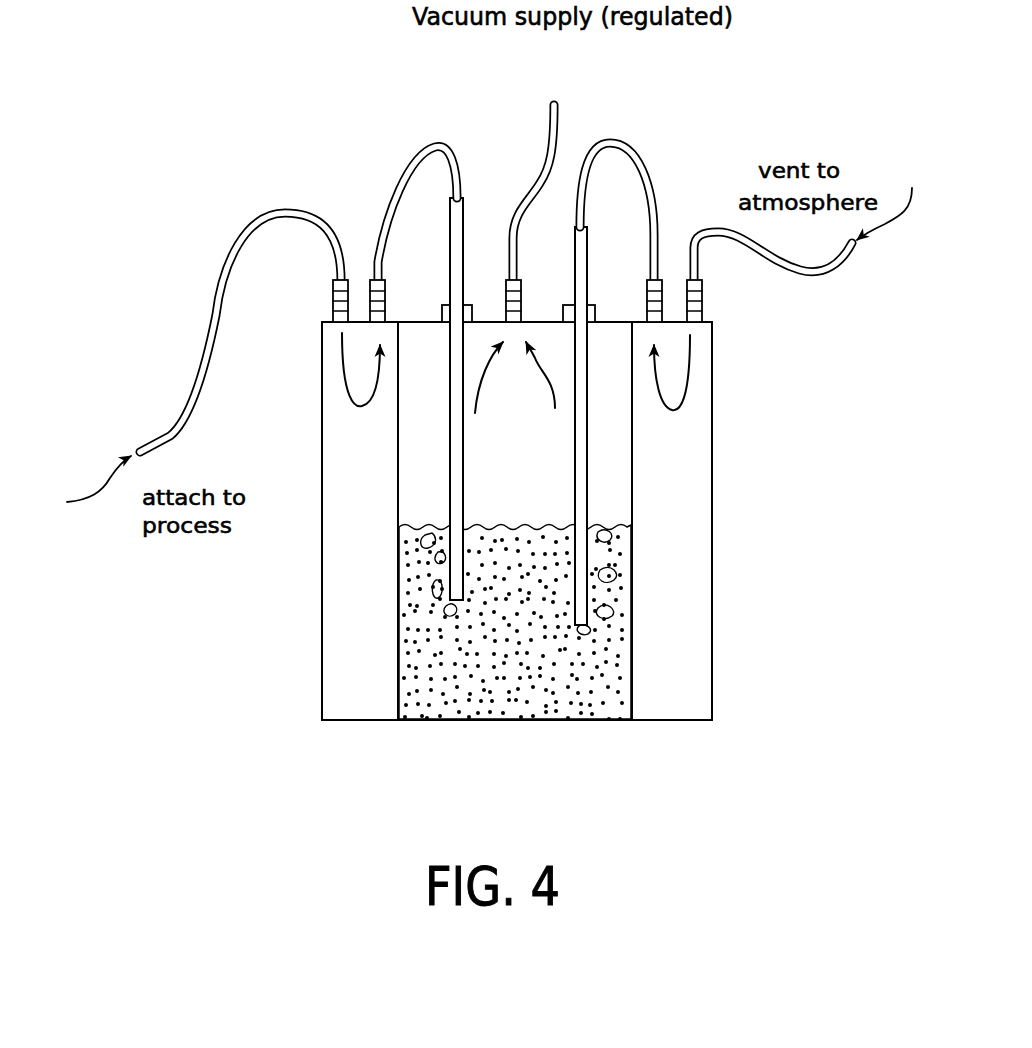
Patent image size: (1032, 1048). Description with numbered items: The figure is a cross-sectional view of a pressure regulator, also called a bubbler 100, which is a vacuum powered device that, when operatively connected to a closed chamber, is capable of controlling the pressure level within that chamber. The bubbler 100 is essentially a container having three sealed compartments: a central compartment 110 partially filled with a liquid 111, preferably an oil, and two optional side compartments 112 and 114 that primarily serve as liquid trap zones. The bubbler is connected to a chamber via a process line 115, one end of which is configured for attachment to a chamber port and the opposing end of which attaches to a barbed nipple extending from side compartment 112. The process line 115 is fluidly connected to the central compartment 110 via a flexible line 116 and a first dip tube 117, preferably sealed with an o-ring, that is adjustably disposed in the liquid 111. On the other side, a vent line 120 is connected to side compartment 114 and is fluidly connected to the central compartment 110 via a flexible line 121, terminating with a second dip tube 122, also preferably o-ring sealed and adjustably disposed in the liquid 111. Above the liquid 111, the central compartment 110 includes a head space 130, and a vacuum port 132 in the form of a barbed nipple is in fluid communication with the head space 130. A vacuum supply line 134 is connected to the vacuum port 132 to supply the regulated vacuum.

The bubbler 100 is at (206, 680).
The central compartment 110 is at (622, 468).
The liquid 111 is at (518, 707).
The side compartment 112 is at (333, 613).
The side compartment 114 is at (693, 630).
The process line 115 is at (170, 438).
The flexible line 116 is at (395, 195).
The first dip tube 117 is at (463, 224).
The vent line 120 is at (780, 272).
The flexible line 121 is at (652, 183).
The second dip tube 122 is at (587, 264).
The head space 130 is at (552, 320).
The vacuum port 132 is at (508, 293).
The vacuum supply line 134 is at (553, 201).